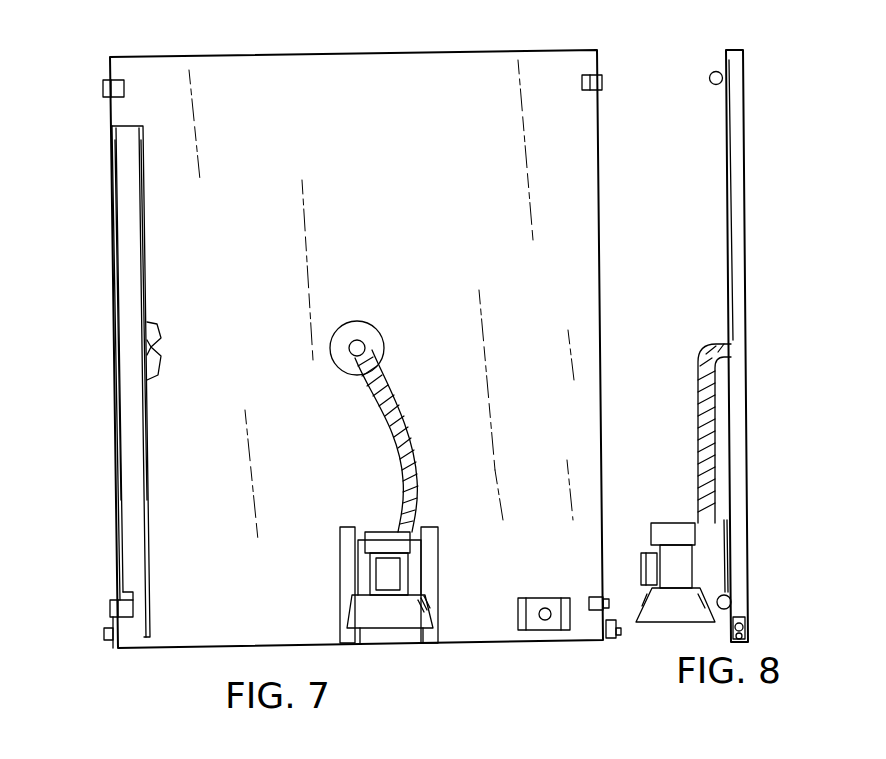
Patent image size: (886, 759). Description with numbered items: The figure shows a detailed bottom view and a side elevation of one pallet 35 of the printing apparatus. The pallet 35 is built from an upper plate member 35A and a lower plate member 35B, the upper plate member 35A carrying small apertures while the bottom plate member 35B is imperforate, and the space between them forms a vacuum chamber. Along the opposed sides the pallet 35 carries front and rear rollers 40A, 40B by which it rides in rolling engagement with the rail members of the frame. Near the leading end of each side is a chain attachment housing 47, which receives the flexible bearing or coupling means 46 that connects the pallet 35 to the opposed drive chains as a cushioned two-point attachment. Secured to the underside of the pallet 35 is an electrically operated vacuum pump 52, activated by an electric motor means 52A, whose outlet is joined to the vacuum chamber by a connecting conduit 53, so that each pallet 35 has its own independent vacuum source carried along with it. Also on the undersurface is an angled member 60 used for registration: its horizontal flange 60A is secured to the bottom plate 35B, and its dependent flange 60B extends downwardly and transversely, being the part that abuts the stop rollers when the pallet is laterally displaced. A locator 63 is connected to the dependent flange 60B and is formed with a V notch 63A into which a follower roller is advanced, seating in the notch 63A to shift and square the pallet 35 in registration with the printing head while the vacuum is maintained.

In FIG. 8, the pallet 35 is at (745, 208).
In FIG. 8, the upper plate member 35A is at (746, 118).
In FIG. 7, the lower plate member 35B is at (334, 146).
In FIG. 8, the lower plate member 35B is at (728, 170).
In FIG. 7, the front roller 40A is at (112, 609).
In FIG. 8, the front roller 40A is at (731, 601).
In FIG. 7, the rear roller 40B is at (104, 87).
In FIG. 8, the rear roller 40B is at (712, 78).
In FIG. 7, the flexible bearing or coupling means 46 is at (114, 647).
In FIG. 8, the flexible bearing or coupling means 46 is at (745, 634).
In FIG. 7, the chain attachment housing 47 is at (113, 648).
In FIG. 8, the chain attachment housing 47 is at (746, 627).
In FIG. 7, the vacuum pump 52 is at (372, 565).
In FIG. 8, the vacuum pump 52 is at (686, 565).
In FIG. 7, the electric motor means 52A is at (386, 534).
In FIG. 8, the electric motor means 52A is at (675, 523).
In FIG. 7, the connecting conduit 53 is at (409, 419).
In FIG. 8, the connecting conduit 53 is at (697, 371).
In FIG. 7, the angled member 60 is at (116, 262).
In FIG. 7, the horizontal flange 60A is at (125, 190).
In FIG. 7, the dependent flange 60B is at (150, 205).
In FIG. 7, the locator 63 is at (160, 326).
In FIG. 7, the V notch 63A is at (153, 349).